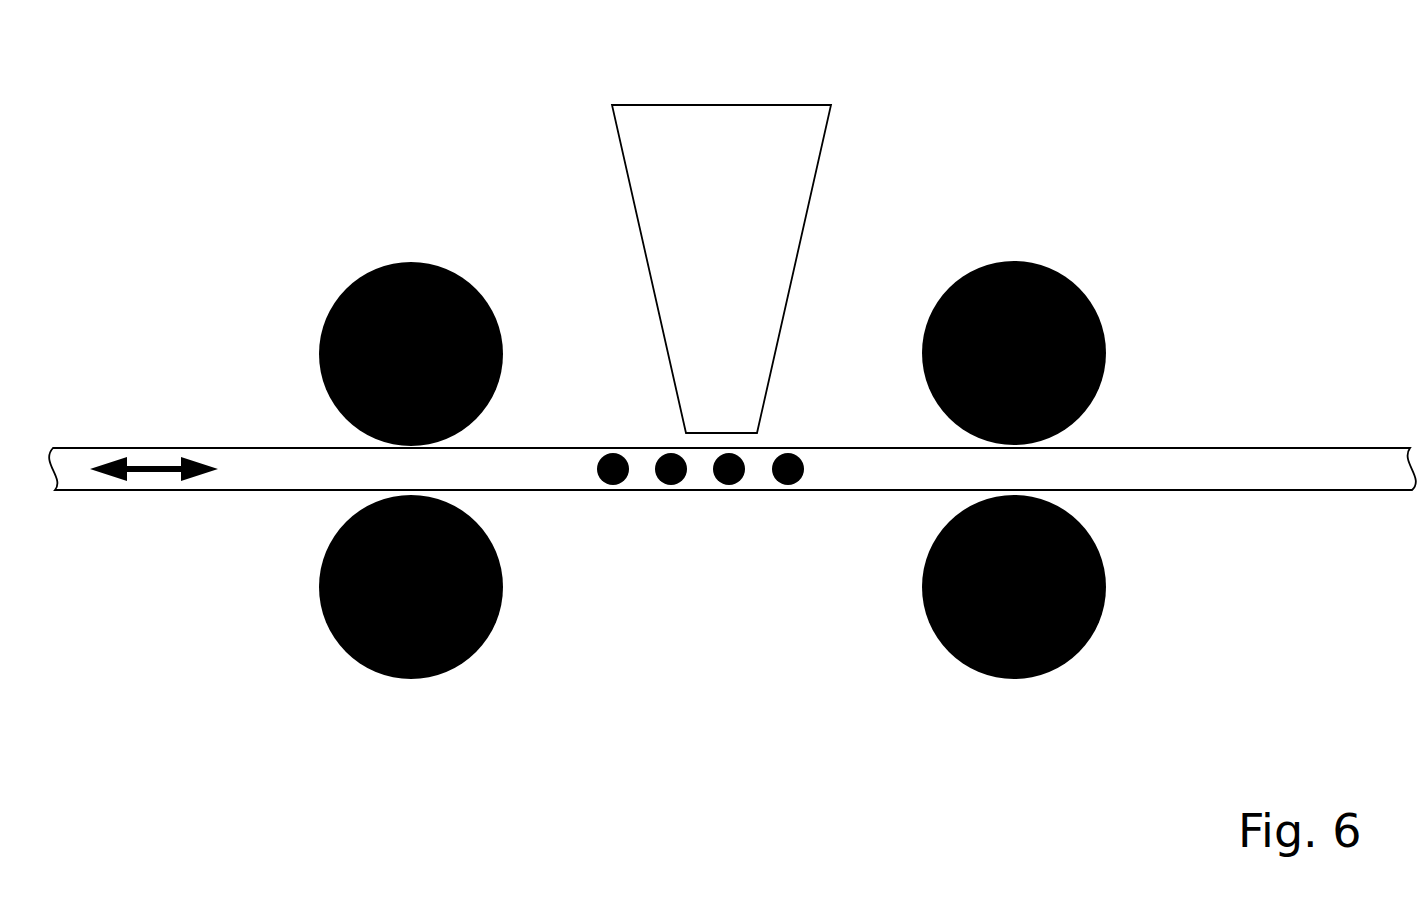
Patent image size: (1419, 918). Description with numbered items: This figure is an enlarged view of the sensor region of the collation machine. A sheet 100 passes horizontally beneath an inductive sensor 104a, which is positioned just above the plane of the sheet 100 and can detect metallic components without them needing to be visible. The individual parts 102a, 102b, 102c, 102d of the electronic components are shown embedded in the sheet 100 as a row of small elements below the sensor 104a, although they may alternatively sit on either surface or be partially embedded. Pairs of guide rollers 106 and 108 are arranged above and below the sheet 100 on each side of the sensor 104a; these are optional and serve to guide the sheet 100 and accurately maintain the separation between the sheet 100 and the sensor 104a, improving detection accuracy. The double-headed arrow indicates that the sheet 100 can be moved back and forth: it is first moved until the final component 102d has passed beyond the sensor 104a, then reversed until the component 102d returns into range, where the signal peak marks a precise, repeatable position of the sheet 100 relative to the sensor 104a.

The sheet 100 is at (260, 463).
The part of electronic component 102a is at (607, 486).
The part of electronic component 102b is at (665, 486).
The part of electronic component 102c is at (723, 486).
The part of electronic component 102d is at (783, 486).
The sensor 104a is at (802, 105).
The roller 106 is at (1083, 287).
The roller 108 is at (387, 262).